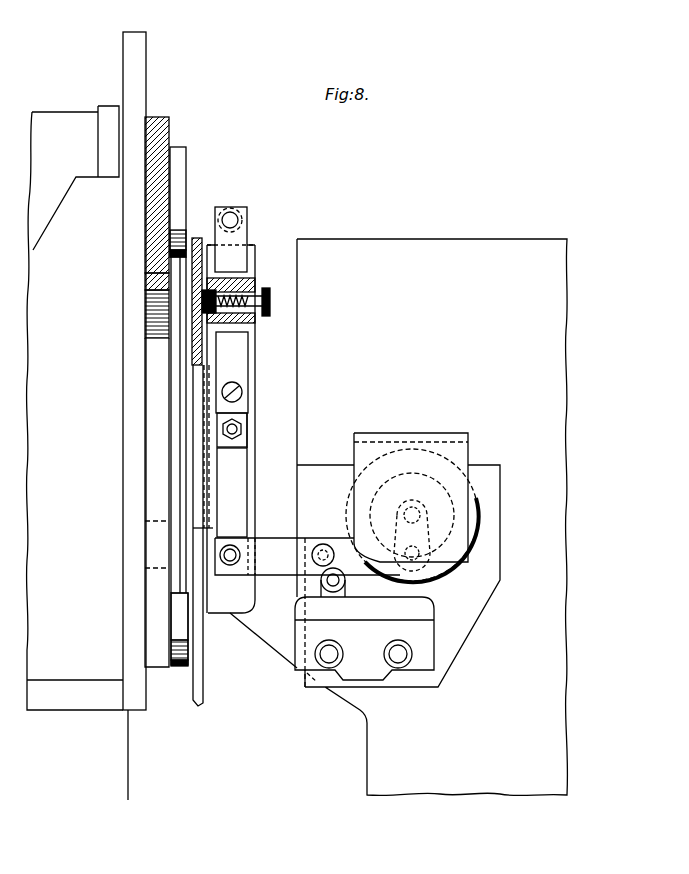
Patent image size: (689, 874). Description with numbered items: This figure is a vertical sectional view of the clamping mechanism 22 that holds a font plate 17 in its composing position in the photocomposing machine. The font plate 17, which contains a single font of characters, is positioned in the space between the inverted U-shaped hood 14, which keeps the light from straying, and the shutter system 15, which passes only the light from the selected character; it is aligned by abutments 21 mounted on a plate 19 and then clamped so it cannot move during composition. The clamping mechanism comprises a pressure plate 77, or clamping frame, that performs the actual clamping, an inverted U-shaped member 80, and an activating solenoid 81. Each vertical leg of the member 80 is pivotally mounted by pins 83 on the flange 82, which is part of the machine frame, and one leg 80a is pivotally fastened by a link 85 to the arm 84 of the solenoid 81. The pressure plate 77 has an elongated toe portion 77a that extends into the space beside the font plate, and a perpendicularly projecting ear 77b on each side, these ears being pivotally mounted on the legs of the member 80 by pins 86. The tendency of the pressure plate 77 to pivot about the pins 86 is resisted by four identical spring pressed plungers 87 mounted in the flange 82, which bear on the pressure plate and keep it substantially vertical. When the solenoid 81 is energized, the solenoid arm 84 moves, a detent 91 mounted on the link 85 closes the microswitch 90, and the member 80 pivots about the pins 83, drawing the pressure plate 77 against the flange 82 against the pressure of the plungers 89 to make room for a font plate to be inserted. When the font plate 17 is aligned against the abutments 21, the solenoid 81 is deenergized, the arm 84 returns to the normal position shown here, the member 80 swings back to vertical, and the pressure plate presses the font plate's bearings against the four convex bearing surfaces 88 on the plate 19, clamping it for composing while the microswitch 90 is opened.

The hood 14 is at (480, 245).
The shutter system 15 is at (62, 116).
The font plate 17 is at (183, 407).
The plate 19 is at (158, 125).
The abutments 21 is at (178, 150).
The clamping mechanism 22 is at (261, 219).
The pressure plate 77 is at (198, 238).
The toe portion 77a is at (198, 634).
The ear 77b is at (245, 450).
The inverted U-shaped member 80 is at (236, 207).
The leg 80a is at (243, 352).
The solenoid 81 is at (470, 508).
The flange 82 is at (257, 265).
The pins 83 is at (236, 394).
The solenoid arm 84 is at (412, 526).
The link 85 is at (288, 577).
The pins 86 is at (238, 430).
The spring pressed plungers 87 is at (180, 300).
The convex bearing surfaces 88 is at (170, 280).
The plungers 89 is at (269, 297).
The microswitch 90 is at (415, 636).
The detent 91 is at (323, 544).